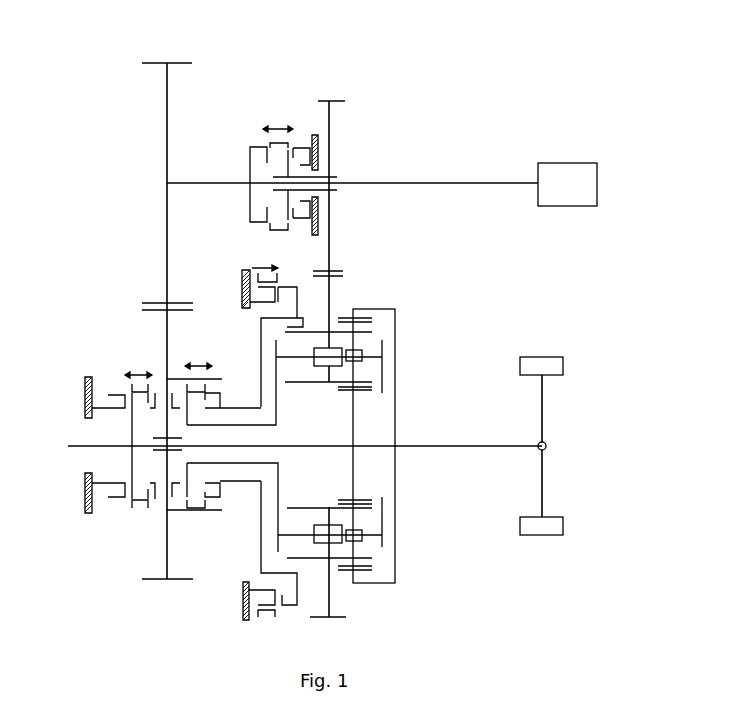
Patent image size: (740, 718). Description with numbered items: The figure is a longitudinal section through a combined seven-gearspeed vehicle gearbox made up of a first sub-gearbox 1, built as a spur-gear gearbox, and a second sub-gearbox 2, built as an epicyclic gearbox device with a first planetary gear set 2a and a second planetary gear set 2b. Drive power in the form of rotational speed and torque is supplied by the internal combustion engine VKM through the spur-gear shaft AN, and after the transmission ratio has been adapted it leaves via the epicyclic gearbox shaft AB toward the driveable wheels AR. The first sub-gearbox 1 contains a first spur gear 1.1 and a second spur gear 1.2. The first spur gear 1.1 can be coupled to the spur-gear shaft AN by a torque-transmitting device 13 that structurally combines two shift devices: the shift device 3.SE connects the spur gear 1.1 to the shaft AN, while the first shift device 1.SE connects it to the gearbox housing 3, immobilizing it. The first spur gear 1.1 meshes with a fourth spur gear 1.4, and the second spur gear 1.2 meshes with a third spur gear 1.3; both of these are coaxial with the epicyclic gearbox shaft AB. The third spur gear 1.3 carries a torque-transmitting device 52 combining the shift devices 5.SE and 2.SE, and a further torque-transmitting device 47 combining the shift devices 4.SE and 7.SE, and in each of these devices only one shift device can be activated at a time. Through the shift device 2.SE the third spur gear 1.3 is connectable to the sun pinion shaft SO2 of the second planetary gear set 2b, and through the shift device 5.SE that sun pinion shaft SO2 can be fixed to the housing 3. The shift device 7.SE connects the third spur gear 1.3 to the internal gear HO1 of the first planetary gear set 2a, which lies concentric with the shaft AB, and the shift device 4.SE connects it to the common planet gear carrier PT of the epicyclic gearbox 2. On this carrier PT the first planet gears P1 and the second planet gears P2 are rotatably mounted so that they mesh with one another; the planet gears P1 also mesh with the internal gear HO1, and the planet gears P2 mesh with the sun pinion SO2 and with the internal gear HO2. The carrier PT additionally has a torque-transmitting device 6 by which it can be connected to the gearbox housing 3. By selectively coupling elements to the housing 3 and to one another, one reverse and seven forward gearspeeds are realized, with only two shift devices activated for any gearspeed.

The first sub-gearbox 1 is at (370, 172).
The first spur gear 1.1 is at (333, 119).
The second spur gear 1.2 is at (170, 84).
The third spur gear 1.3 is at (166, 332).
The fourth spur gear 1.4 is at (343, 273).
The torque-transmitting device 13 is at (274, 138).
The shift device 3.SE is at (261, 167).
The first shift device 1.SE is at (299, 161).
The gearbox housing 3 is at (320, 150).
The spur-gear shaft AN is at (506, 181).
The internal combustion engine VKM is at (567, 184).
The torque-transmitting device 6 is at (183, 349).
The shift device 5.SE is at (183, 371).
The torque-transmitting device 52 is at (106, 399).
The shift device 2.SE is at (138, 424).
The torque-transmitting device 47 is at (214, 403).
The shift device 4.SE is at (194, 425).
The shift device 7.SE is at (233, 419).
The internal gear of the first planetary gear set HO1 is at (260, 383).
The first planet gears P1 is at (300, 385).
The sun pinion shaft SO2 is at (337, 432).
The planet gear carrier PT is at (278, 424).
The second planet gears P2 is at (372, 325).
The second sub-gearbox 2 is at (352, 458).
The first planetary gear set 2a is at (307, 605).
The second planetary gear set 2b is at (364, 298).
The internal gear of the second planetary gear set HO2 is at (396, 343).
The epicyclic gearbox shaft AB is at (480, 446).
The driveable wheels AR is at (558, 378).